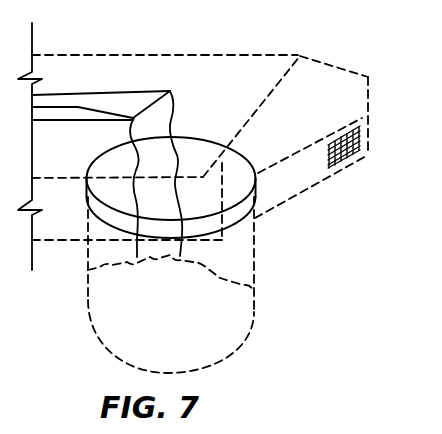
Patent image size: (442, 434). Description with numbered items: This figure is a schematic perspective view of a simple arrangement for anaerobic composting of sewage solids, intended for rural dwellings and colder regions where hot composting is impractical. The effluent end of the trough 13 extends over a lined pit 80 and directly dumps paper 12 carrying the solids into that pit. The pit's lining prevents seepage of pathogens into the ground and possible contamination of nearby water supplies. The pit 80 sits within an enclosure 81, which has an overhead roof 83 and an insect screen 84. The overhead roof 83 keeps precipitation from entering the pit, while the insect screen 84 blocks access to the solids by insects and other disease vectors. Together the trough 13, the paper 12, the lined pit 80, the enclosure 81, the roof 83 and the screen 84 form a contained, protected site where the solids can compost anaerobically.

The paper 12 is at (177, 117).
The trough 13 is at (62, 98).
The lined pit 80 is at (252, 315).
The enclosure 81 is at (372, 96).
The overhead roof 83 is at (313, 56).
The insect screen 84 is at (364, 137).